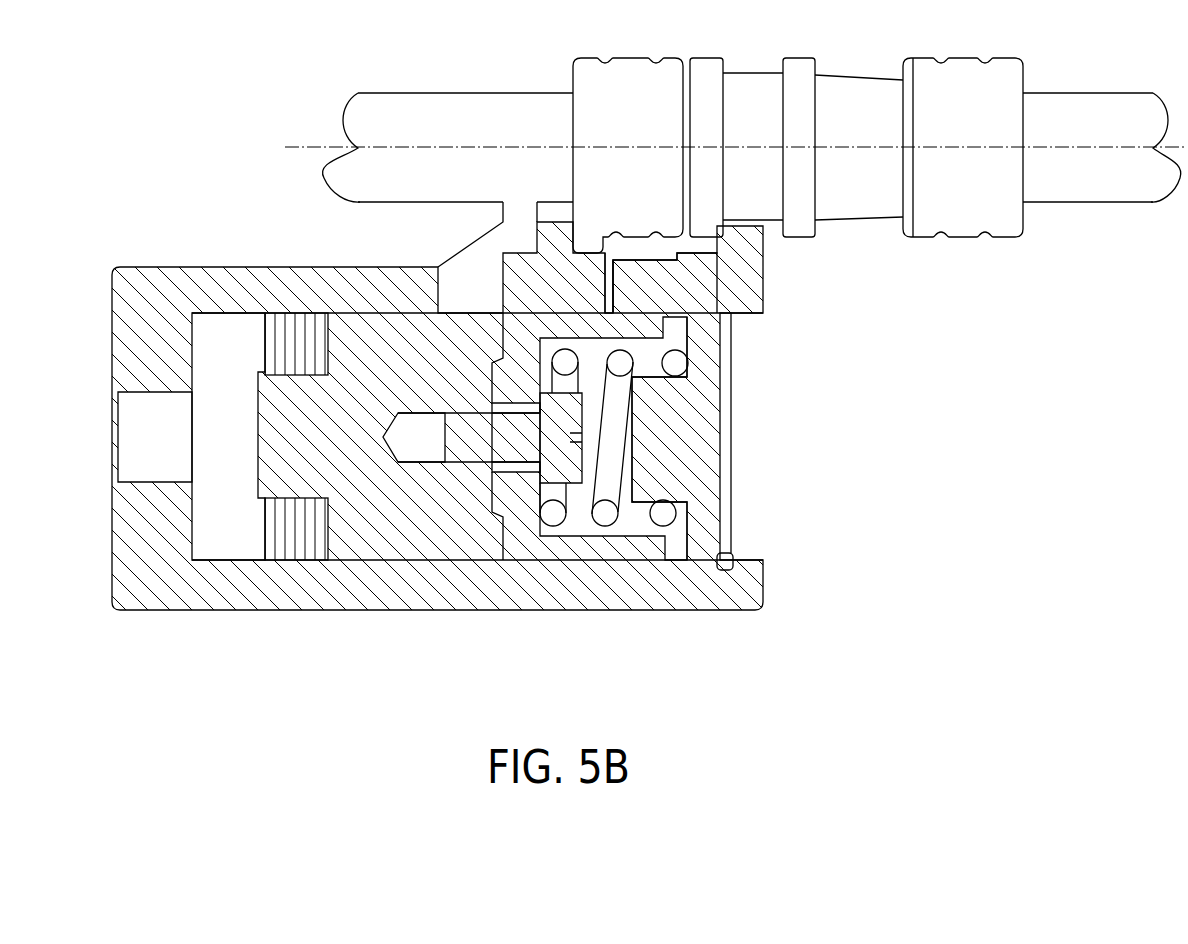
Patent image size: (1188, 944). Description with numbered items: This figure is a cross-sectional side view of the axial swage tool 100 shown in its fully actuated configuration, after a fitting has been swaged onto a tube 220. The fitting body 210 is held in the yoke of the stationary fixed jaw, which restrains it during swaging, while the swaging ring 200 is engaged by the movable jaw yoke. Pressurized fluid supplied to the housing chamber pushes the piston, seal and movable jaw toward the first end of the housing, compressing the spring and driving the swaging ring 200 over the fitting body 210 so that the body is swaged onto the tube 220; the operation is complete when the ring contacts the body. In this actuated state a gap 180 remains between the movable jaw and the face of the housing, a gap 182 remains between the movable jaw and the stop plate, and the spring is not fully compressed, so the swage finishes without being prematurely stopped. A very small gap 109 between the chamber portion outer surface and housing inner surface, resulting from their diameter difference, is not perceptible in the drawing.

The axial swage tool 100 is at (162, 232).
The tube 220 is at (376, 92).
The swaging ring 200 is at (590, 58).
The fitting body 210 is at (715, 58).
The gap 180 is at (608, 287).
The gap 109 is at (637, 313).
The gap 182 is at (675, 330).